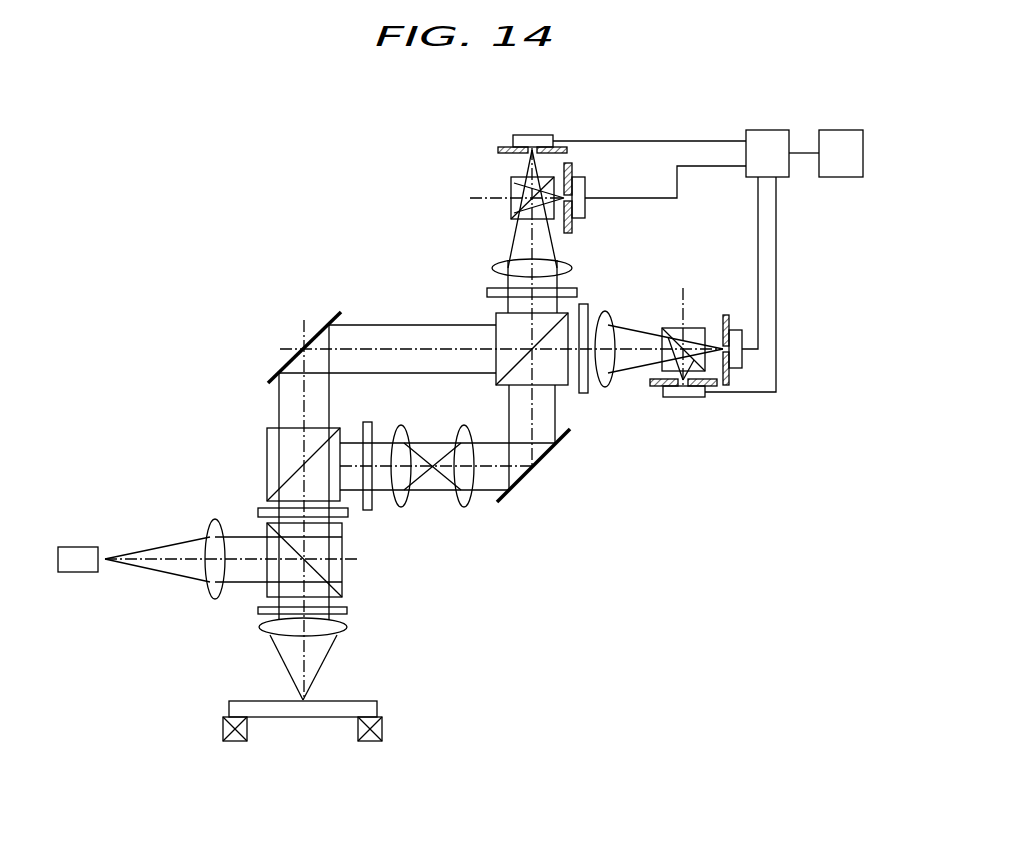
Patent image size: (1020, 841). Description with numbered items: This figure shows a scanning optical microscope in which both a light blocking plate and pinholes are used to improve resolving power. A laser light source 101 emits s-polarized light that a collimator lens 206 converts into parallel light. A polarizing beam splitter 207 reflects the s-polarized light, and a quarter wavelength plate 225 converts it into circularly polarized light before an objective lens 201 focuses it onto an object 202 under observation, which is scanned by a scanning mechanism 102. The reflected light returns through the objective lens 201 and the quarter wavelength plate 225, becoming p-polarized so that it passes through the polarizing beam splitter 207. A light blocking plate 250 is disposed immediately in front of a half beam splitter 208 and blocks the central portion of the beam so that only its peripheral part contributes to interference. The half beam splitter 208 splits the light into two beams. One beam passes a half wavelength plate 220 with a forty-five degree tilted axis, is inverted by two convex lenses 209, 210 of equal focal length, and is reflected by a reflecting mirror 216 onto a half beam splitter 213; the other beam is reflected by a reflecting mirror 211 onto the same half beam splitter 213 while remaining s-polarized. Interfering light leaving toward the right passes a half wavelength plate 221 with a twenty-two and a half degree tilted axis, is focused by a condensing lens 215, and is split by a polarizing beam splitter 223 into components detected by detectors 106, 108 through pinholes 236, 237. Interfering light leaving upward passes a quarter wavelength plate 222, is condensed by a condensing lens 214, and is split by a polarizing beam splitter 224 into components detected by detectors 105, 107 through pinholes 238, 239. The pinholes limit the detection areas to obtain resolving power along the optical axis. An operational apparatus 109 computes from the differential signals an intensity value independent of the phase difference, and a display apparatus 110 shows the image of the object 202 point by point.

The laser light source 101 is at (83, 547).
The scanning mechanism 102 is at (382, 724).
The detector 105 is at (527, 135).
The detector 106 is at (735, 330).
The detector 107 is at (585, 182).
The detector 108 is at (672, 397).
The operational apparatus 109 is at (762, 130).
The display apparatus 110 is at (838, 130).
The objective lens 201 is at (265, 634).
The object under observation 202 is at (362, 701).
The collimator lens 206 is at (210, 526).
The polarizing beam splitter 207 is at (342, 576).
The half beam splitter 208 is at (267, 440).
The convex lens 209 is at (399, 507).
The convex lens 210 is at (463, 507).
The reflecting mirror 211 is at (290, 362).
The half beam splitter 213 is at (496, 318).
The condensing lens 214 is at (494, 268).
The condensing lens 215 is at (605, 313).
The reflecting mirror 216 is at (545, 460).
The half wavelength plate 220 is at (368, 422).
The half wavelength plate 221 is at (583, 304).
The quarter wavelength plate 222 is at (487, 292).
The polarizing beam splitter 223 is at (668, 327).
The polarizing beam splitter 224 is at (511, 185).
The quarter wavelength plate 225 is at (258, 610).
The pinhole 236 is at (729, 378).
The pinhole 237 is at (710, 388).
The pinhole 238 is at (498, 150).
The pinhole 239 is at (569, 163).
The light blocking plate 250 is at (258, 511).